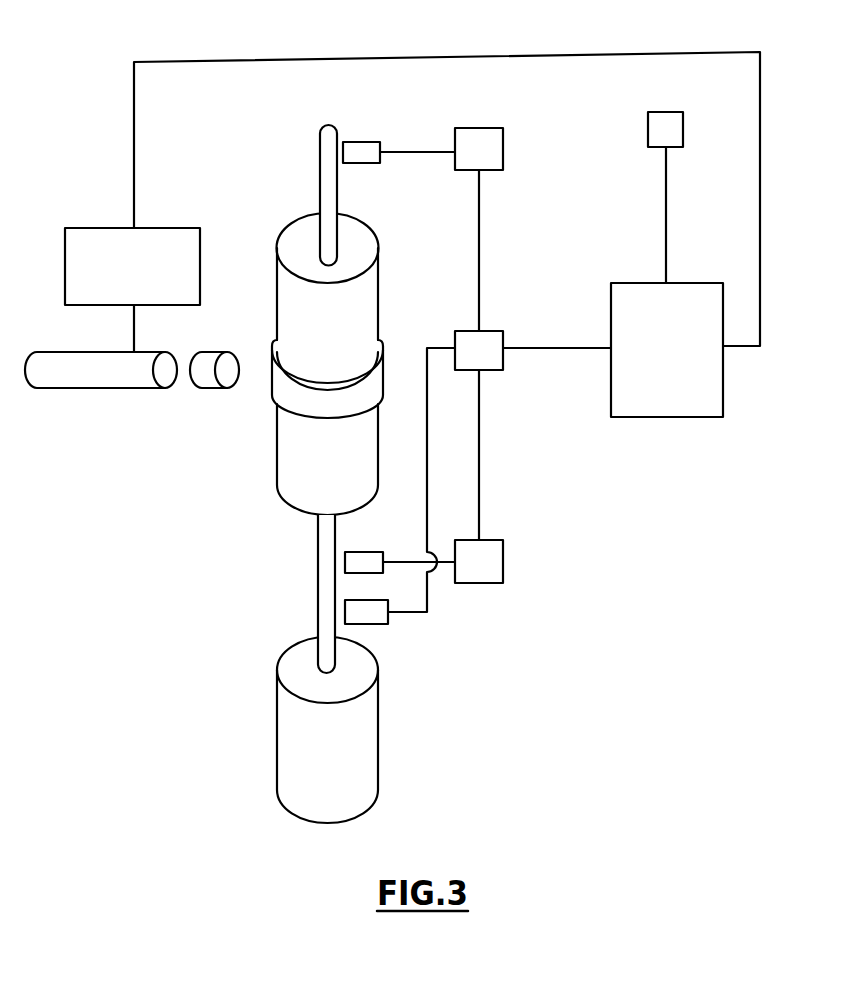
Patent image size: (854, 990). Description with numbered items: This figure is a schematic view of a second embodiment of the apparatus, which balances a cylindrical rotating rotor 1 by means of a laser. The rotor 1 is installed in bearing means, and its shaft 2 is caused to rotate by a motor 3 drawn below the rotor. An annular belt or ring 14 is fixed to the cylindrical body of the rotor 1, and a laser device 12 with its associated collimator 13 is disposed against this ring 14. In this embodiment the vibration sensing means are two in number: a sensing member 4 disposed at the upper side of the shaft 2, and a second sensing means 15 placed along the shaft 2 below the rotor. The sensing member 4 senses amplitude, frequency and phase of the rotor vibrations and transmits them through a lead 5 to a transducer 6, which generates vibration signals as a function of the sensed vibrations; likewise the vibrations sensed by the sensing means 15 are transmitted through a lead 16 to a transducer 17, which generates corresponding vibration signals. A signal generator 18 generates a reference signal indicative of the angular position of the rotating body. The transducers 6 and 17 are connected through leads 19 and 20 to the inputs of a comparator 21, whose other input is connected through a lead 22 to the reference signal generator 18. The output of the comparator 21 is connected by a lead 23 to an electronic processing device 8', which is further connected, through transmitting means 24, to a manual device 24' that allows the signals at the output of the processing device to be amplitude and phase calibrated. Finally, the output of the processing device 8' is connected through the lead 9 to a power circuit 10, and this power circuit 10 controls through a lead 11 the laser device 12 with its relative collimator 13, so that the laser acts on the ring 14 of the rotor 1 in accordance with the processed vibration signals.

The cylindrical rotating rotor 1 is at (378, 268).
The shaft 2 is at (320, 175).
The motor 3 is at (276, 728).
The sensing member 4 is at (358, 143).
The lead 5 is at (405, 150).
The transducer 6 is at (484, 133).
The electronic processing device 8' is at (667, 379).
The lead 9 is at (353, 59).
The power circuit 10 is at (102, 237).
The lead 11 is at (134, 337).
The laser device 12 is at (83, 382).
The collimator 13 is at (207, 380).
The annular belt or ring 14 is at (315, 408).
The sensing means 15 is at (356, 552).
The lead 16 is at (405, 560).
The transducer 17 is at (488, 558).
The reference signal generator 18 is at (378, 623).
The lead 19 is at (479, 245).
The lead 20 is at (479, 453).
The comparator 21 is at (492, 331).
The lead 22 is at (426, 445).
The lead 23 is at (548, 348).
The transmitting means 24 is at (633, 215).
The manual device 24' is at (674, 108).